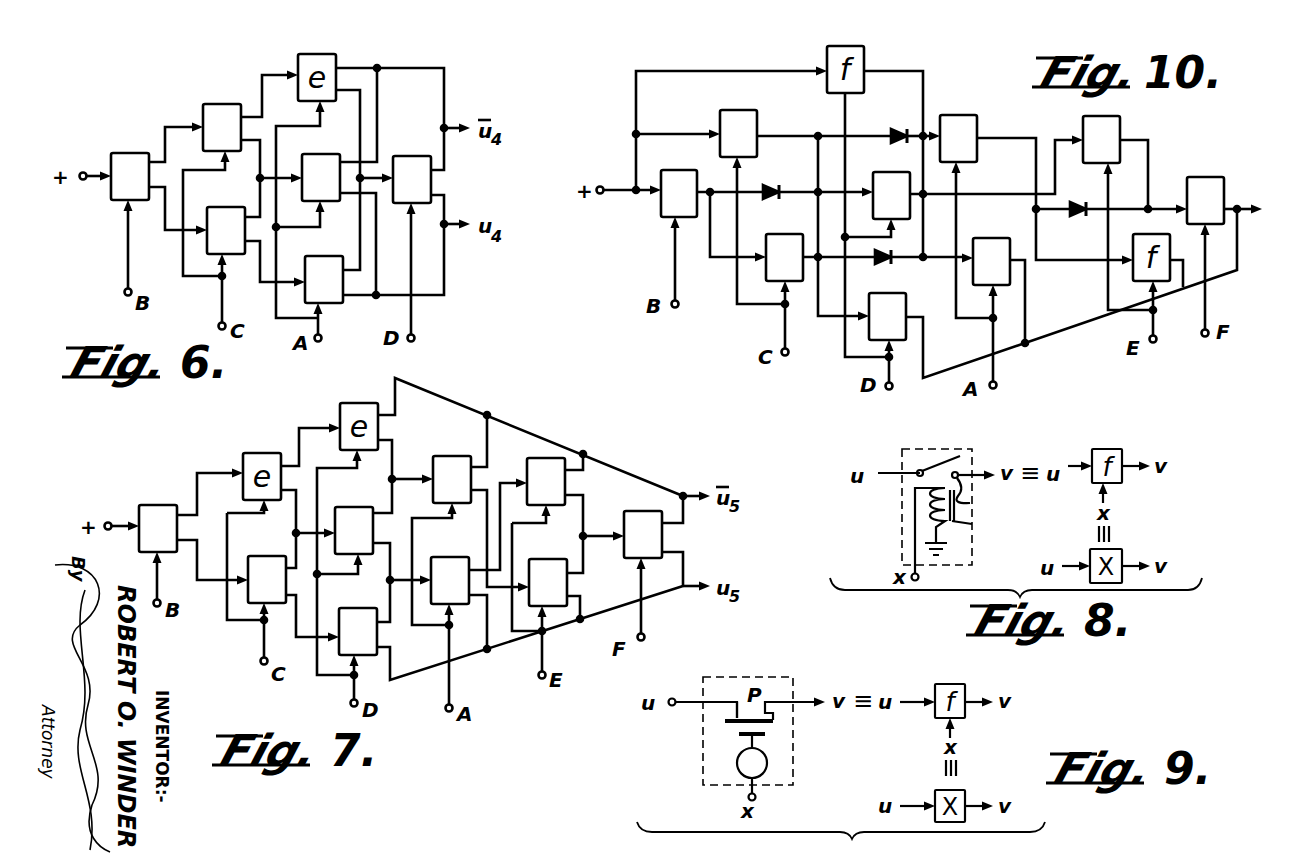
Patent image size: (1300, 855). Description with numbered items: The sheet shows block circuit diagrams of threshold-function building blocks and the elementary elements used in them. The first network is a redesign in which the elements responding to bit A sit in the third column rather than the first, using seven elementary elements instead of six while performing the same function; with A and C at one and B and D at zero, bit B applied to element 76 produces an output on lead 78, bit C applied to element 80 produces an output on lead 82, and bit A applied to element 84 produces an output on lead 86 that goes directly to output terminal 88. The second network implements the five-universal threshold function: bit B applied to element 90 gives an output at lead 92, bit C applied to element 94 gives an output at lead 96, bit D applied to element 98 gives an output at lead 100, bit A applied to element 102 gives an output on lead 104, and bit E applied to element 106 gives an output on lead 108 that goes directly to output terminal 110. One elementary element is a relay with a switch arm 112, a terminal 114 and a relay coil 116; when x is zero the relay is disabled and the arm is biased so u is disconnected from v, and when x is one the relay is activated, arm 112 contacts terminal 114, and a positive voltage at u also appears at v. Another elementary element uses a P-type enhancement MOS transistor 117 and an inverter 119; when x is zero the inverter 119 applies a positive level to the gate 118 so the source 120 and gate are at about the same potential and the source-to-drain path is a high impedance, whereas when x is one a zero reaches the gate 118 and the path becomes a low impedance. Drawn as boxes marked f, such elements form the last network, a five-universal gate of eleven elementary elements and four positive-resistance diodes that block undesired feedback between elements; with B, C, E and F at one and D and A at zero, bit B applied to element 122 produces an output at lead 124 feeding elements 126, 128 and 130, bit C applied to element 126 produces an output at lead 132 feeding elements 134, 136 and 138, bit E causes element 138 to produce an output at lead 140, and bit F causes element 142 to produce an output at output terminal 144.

In FIG. 6, the element 76 is at (137, 152).
In FIG. 6, the lead 78 is at (180, 124).
In FIG. 6, the element 80 is at (225, 103).
In FIG. 6, the lead 82 is at (256, 169).
In FIG. 6, the element 84 is at (328, 152).
In FIG. 6, the lead 86 is at (377, 268).
In FIG. 6, the output terminal 88 is at (447, 229).
In FIG. 7, the element 90 is at (150, 504).
In FIG. 7, the lead 92 is at (220, 584).
In FIG. 7, the element 94 is at (272, 556).
In FIG. 7, the lead 96 is at (322, 512).
In FIG. 7, the element 98 is at (368, 570).
In FIG. 7, the lead 100 is at (402, 476).
In FIG. 7, the element 102 is at (450, 455).
In FIG. 7, the lead 104 is at (483, 520).
In FIG. 7, the element 106 is at (550, 552).
In FIG. 7, the lead 108 is at (583, 603).
In FIG. 7, the output terminal 110 is at (683, 588).
In FIG. 8, the switch arm 112 is at (930, 465).
In FIG. 8, the terminal 114 is at (970, 503).
In FIG. 8, the relay coil 116 is at (972, 524).
In FIG. 9, the P-type MOS transistor 117 is at (724, 745).
In FIG. 9, the gate 118 is at (760, 737).
In FIG. 9, the inverter 119 is at (763, 773).
In FIG. 9, the source 120 is at (775, 719).
In FIG. 10, the element 122 is at (681, 163).
In FIG. 10, the lead 124 is at (703, 189).
In FIG. 10, the element 126 is at (793, 245).
In FIG. 10, the element 128 is at (886, 180).
In FIG. 10, the element 130 is at (965, 115).
In FIG. 10, the lead 132 is at (806, 258).
In FIG. 10, the element 134 is at (898, 292).
In FIG. 10, the element 136 is at (1000, 228).
In FIG. 10, the element 138 is at (1121, 120).
In FIG. 10, the lead 140 is at (1142, 138).
In FIG. 10, the element 142 is at (1208, 176).
In FIG. 10, the output terminal 144 is at (1238, 203).